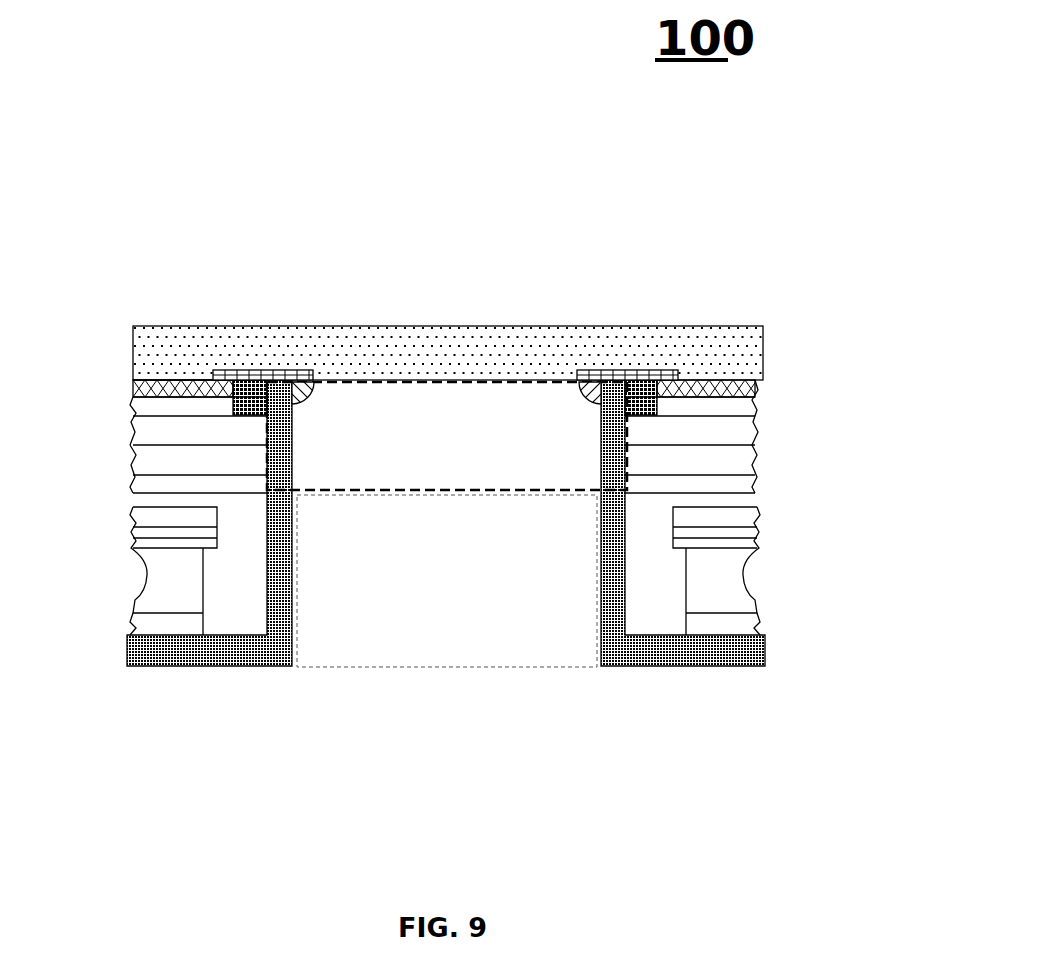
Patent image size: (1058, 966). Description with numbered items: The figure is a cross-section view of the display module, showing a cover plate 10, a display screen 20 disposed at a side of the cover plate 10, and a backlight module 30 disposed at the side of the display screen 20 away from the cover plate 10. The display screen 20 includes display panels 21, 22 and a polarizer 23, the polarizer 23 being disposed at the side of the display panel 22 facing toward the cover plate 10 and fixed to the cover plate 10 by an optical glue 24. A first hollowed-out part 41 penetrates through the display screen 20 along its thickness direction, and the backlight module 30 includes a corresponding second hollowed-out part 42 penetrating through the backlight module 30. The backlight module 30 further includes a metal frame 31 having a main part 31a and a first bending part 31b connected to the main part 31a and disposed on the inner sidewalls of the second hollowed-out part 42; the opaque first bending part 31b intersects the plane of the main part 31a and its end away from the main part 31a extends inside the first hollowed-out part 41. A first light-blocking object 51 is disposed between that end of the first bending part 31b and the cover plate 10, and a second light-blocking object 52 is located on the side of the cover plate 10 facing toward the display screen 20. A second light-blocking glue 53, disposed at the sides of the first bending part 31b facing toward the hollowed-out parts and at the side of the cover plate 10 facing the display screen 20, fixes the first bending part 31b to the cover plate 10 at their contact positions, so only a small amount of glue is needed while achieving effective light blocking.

The cover plate 10 is at (748, 327).
The display screen 20 is at (760, 382).
The display panel 21 is at (147, 465).
The display panel 22 is at (147, 433).
The polarizer 23 is at (135, 402).
The optical glue 24 is at (137, 382).
The backlight module 30 is at (765, 507).
The metal frame 31 is at (120, 783).
The main part 31a is at (232, 652).
The first bending part 31b is at (268, 605).
The first hollowed-out part 41 is at (443, 383).
The second hollowed-out part 42 is at (448, 667).
The first light-blocking object 51 is at (258, 382).
The second light-blocking object 52 is at (300, 377).
The second light-blocking glue 53 is at (302, 393).